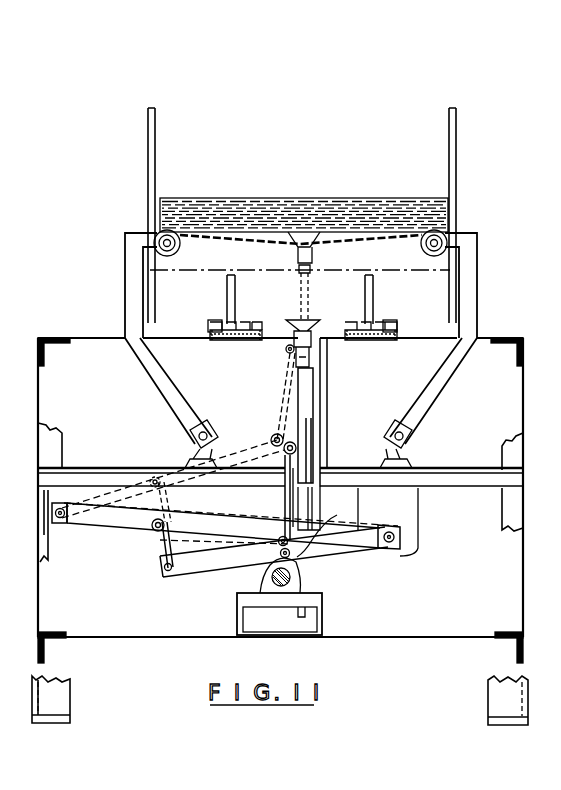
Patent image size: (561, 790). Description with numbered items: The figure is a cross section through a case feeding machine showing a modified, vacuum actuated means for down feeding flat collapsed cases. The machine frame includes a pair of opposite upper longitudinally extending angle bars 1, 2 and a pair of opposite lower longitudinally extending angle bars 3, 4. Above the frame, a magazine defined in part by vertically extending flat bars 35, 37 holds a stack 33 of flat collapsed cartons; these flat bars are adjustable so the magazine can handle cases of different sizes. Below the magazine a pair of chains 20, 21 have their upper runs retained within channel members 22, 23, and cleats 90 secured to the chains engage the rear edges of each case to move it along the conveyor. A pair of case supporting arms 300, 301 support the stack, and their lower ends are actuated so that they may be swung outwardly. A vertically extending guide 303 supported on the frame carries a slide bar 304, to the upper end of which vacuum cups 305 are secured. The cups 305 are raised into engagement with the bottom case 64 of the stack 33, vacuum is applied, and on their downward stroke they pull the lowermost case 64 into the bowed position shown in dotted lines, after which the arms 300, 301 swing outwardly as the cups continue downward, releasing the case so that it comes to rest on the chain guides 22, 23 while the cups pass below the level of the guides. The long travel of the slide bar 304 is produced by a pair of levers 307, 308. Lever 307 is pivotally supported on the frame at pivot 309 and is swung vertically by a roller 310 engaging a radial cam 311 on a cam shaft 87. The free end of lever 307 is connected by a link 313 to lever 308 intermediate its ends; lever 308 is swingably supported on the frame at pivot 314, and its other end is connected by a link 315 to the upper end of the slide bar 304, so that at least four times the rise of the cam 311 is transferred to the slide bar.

The upper longitudinally extending angle bar 1 is at (57, 338).
The upper longitudinally extending angle bar 2 is at (507, 338).
The lower longitudinally extending angle bar 3 is at (57, 640).
The lower longitudinally extending angle bar 4 is at (505, 640).
The chain 20 is at (212, 336).
The chain 21 is at (383, 340).
The channel member 22 is at (203, 322).
The channel member 23 is at (397, 336).
The stack 33 is at (300, 198).
The flat bar 35 is at (456, 156).
The flat bar 37 is at (148, 150).
The bottom case 64 is at (236, 243).
The cam shaft 87 is at (308, 588).
The cleat 90 is at (238, 296).
The case supporting arm 300 is at (154, 388).
The case supporting arm 301 is at (438, 410).
The vertically extending guide 303 is at (318, 407).
The slide bar 304 is at (307, 438).
The vacuum cup 305 is at (308, 326).
The lever 307 is at (203, 583).
The lever 308 is at (118, 531).
The pivot 309 is at (390, 550).
The roller 310 is at (327, 526).
The radial cam 311 is at (298, 570).
The link 313 is at (165, 558).
The pivot 314 is at (60, 520).
The link 315 is at (285, 503).